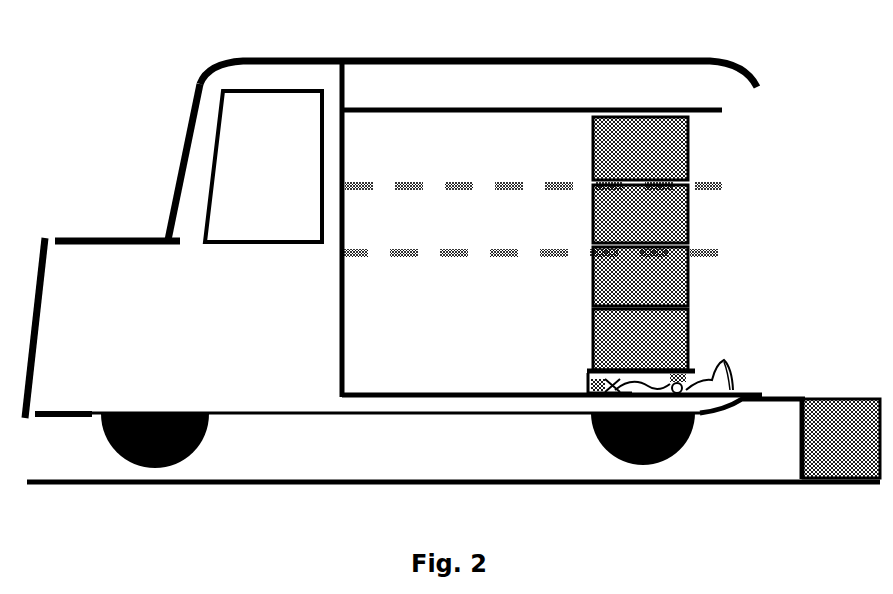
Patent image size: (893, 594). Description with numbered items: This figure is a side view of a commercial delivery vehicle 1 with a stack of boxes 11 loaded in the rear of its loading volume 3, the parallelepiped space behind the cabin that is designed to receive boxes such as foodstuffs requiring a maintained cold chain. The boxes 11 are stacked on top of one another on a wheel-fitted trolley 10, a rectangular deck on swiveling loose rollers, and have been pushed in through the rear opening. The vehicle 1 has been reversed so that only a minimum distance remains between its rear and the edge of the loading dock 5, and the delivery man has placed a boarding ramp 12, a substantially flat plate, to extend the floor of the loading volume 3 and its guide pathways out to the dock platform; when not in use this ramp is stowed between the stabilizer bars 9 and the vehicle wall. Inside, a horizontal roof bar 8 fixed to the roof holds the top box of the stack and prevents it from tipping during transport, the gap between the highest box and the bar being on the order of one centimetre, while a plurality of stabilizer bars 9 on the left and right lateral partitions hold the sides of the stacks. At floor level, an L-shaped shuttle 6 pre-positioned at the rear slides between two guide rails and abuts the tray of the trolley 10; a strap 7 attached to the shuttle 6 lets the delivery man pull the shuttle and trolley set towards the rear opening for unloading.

The vehicle 1 is at (125, 168).
The loading volume 3 is at (540, 138).
The loading dock 5 is at (800, 440).
The shuttle 6 is at (595, 386).
The strap 7 is at (740, 372).
The roof bar 8 is at (377, 108).
The stabilizer bars 9 is at (723, 250).
The wheel-fitted trolley 10 is at (630, 390).
The boxes 11 is at (675, 340).
The boarding ramp 12 is at (780, 403).